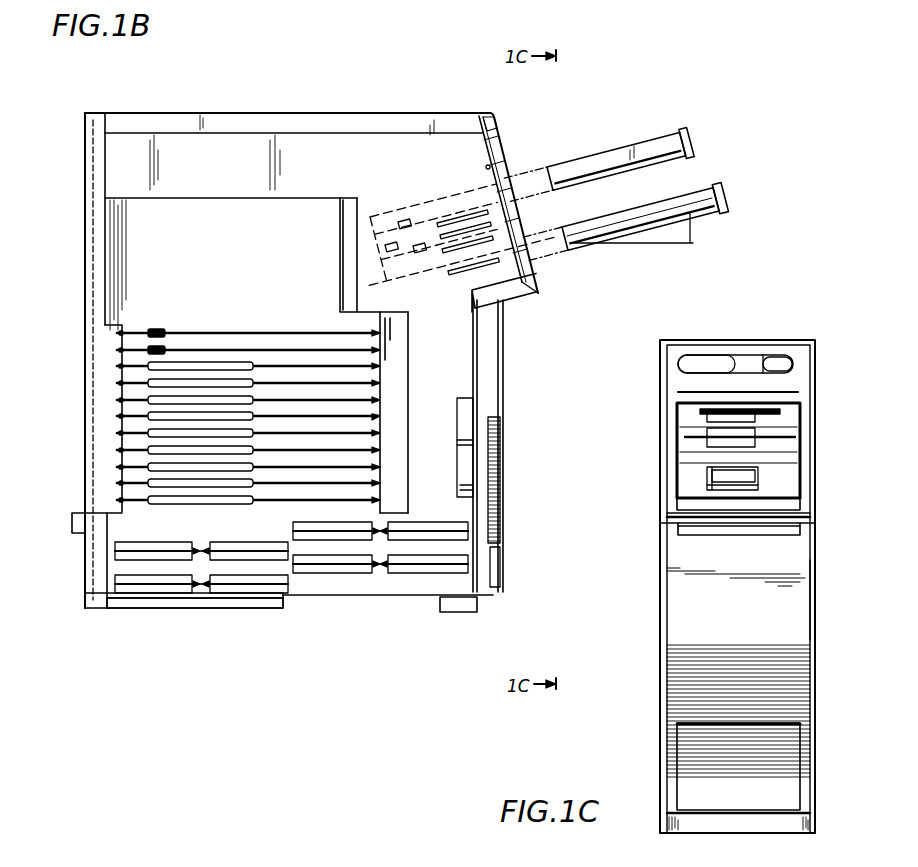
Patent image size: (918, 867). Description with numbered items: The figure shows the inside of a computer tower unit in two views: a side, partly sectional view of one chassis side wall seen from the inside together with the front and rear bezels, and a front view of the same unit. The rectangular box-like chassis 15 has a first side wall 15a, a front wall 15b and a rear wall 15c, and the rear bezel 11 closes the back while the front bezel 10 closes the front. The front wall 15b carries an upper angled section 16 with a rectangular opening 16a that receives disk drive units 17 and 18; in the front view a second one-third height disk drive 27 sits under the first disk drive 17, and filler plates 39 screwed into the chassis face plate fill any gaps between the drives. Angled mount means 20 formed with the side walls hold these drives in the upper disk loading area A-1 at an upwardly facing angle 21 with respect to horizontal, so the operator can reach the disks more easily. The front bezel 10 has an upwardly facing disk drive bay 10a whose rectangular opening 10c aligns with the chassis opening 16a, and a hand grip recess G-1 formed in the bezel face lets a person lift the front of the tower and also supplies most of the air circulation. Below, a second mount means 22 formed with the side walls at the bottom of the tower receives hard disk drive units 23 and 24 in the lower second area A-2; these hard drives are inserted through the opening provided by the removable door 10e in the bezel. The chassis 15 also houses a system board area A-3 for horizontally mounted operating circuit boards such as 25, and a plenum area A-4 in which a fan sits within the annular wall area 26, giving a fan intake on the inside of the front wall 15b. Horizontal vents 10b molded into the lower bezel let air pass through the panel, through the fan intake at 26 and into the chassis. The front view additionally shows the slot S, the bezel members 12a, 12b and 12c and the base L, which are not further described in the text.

In FIG. 1B, the rear bezel 11 is at (85, 246).
In FIG. 1B, the first side wall 15a is at (240, 182).
In FIG. 1B, the rear wall 15c is at (105, 296).
In FIG. 1B, the front wall 15b is at (477, 350).
In FIG. 1B, the chassis 15 is at (481, 112).
In FIG. 1B, the upper angled section 16 is at (493, 138).
In FIG. 1B, the rectangular opening 16a is at (486, 167).
In FIG. 1B, the front bezel 10 is at (501, 392).
In FIG. 1C, the disk drive bay 10a is at (812, 405).
In FIG. 1C, the horizontal vents 10b is at (662, 680).
In FIG. 1C, the rectangular opening 10c is at (795, 457).
In FIG. 1C, the removable door 10e is at (683, 793).
In FIG. 1B, the upper disk loading area A-1 is at (410, 198).
In FIG. 1B, the lower second area A-2 is at (432, 515).
In FIG. 1B, the system board area A-3 is at (195, 325).
In FIG. 1B, the plenum area A-4 is at (457, 354).
In FIG. 1B, the angled mount means 20 is at (398, 218).
In FIG. 1B, the disk drive unit 17 is at (660, 134).
In FIG. 1C, the disk drive unit 17 is at (680, 418).
In FIG. 1B, the disk drive unit 18 is at (700, 187).
In FIG. 1C, the disk drive unit 18 is at (680, 487).
In FIG. 1B, the upwardly facing angle 21 is at (693, 232).
In FIG. 1B, the second mount means 22 is at (520, 521).
In FIG. 1B, the hard disk drive unit 23 is at (160, 556).
In FIG. 1B, the hard disk drive unit 24 is at (340, 535).
In FIG. 1B, the operating circuit board 25 is at (258, 330).
In FIG. 1B, the annular wall area 26 is at (457, 428).
In FIG. 1C, the second disk drive 27 is at (682, 435).
In FIG. 1C, the filler plate 39 is at (682, 460).
In FIG. 1C, the slot S is at (706, 358).
In FIG. 1C, the upper frame member 12a is at (768, 340).
In FIG. 1C, the middle frame member 12b is at (660, 576).
In FIG. 1C, the side frame member 12c is at (815, 587).
In FIG. 1C, the hand grip recess G-1 is at (785, 535).
In FIG. 1B, the base plate L is at (140, 610).
In FIG. 1C, the base plate L is at (815, 824).